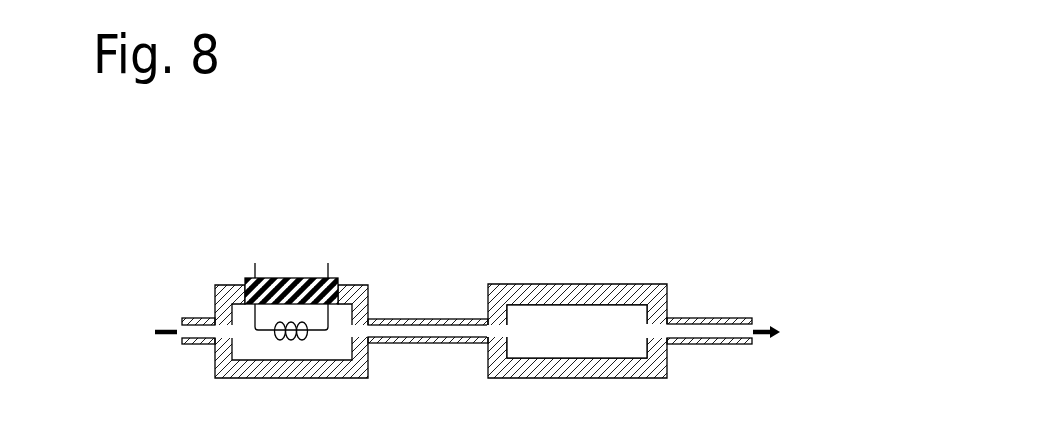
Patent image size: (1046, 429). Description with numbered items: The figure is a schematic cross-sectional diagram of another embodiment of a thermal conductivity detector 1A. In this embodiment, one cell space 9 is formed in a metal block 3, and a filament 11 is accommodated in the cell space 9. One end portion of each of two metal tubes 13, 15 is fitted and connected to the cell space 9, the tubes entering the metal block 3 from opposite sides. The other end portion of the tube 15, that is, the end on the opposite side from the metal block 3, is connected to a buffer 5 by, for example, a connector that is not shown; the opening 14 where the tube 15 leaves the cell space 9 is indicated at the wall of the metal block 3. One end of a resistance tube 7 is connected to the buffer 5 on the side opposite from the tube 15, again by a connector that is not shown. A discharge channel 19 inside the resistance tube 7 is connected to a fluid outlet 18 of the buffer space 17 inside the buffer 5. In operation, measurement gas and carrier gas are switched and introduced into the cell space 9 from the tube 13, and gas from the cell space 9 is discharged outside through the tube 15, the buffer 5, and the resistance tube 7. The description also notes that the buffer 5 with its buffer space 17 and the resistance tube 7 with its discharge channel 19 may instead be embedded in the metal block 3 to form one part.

The thermal conductivity detector 1A is at (396, 222).
The metal block 3 is at (360, 306).
The buffer 5 is at (593, 283).
The resistance tube 7 is at (732, 320).
The cell space 9 is at (242, 313).
The filament 11 is at (290, 320).
The tube 13 is at (197, 317).
The first housing outlet 14 is at (353, 330).
The tube 15 is at (445, 317).
The buffer space 17 is at (560, 335).
The fluid outlet 18 is at (648, 332).
The discharge channel 19 is at (704, 322).